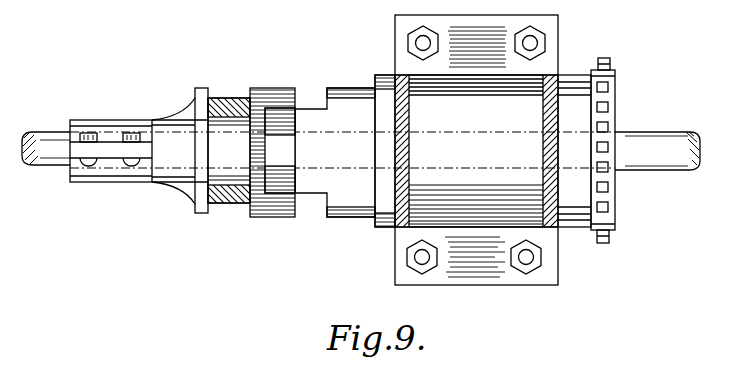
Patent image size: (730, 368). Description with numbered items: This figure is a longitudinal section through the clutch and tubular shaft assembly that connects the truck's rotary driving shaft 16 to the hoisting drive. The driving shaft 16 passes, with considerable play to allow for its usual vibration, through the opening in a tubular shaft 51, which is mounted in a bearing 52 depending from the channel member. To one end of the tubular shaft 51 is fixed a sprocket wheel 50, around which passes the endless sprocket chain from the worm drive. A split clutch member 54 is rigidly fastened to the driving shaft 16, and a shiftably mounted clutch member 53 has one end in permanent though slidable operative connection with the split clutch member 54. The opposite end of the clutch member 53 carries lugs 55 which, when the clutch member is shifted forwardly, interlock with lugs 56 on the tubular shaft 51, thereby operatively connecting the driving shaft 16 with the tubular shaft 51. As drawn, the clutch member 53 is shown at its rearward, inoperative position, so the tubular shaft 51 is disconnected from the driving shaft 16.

The rotary driving shaft 16 is at (46, 158).
The sprocket wheel 50 is at (613, 73).
The tubular shaft 51 is at (581, 212).
The bearing 52 is at (538, 278).
The clutch member 53 is at (230, 178).
The split clutch member 54 is at (110, 158).
The lugs 55 is at (287, 94).
The lugs 56 is at (311, 108).